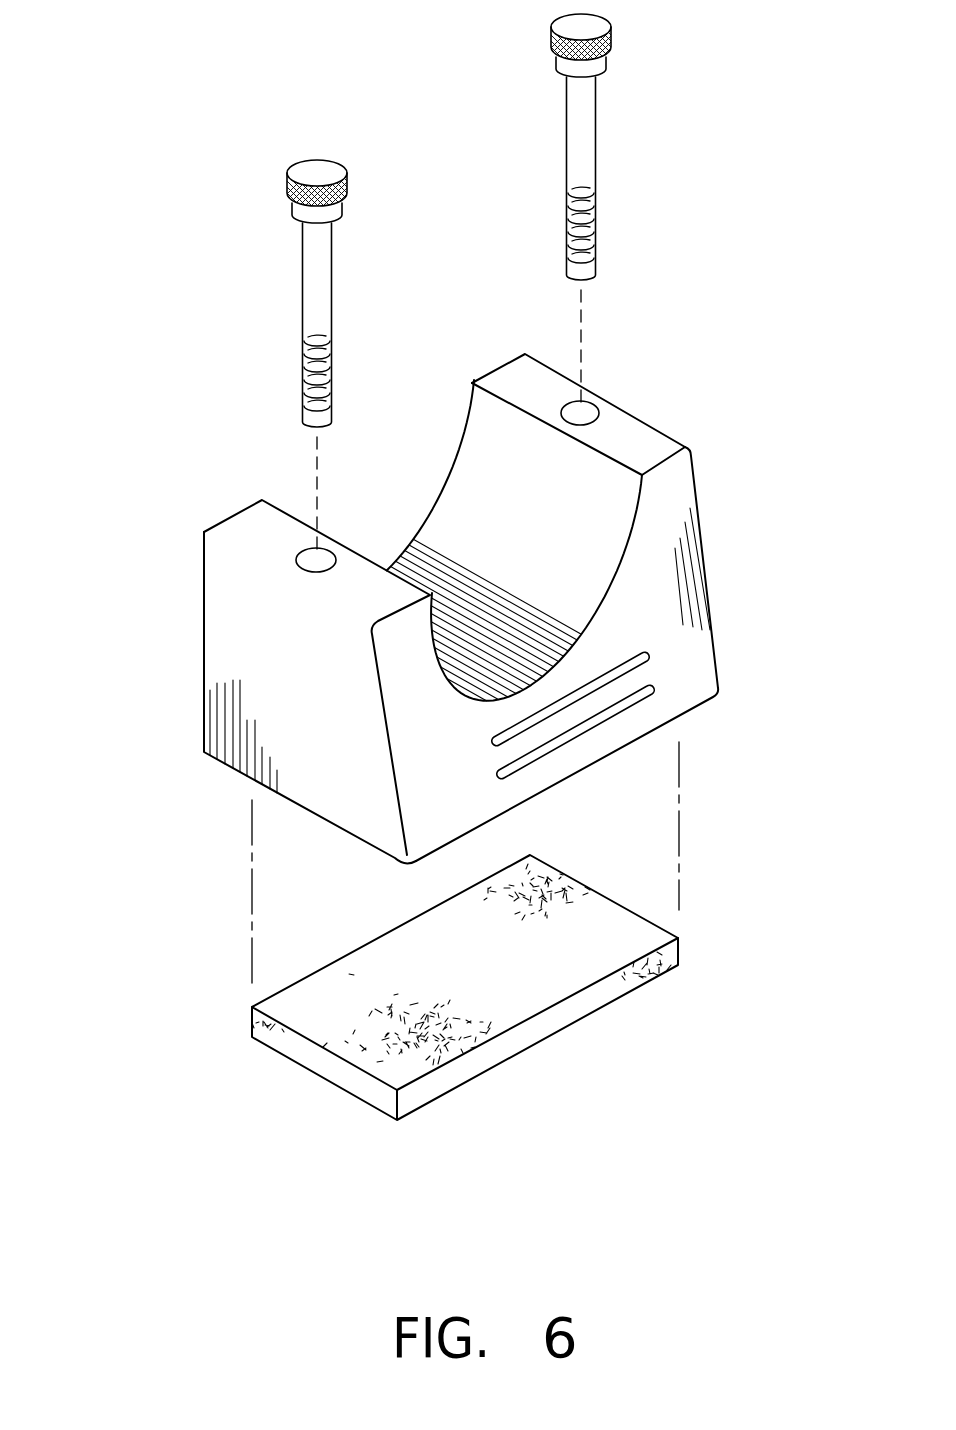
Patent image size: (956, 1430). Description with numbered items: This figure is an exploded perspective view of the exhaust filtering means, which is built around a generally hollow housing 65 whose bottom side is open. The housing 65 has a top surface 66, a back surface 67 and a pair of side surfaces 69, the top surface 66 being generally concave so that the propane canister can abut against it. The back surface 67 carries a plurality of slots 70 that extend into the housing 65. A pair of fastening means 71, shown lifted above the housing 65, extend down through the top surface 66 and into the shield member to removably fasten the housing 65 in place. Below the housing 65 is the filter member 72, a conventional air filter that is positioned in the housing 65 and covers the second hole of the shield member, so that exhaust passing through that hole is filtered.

The housing 65 is at (454, 608).
The top surface 66 is at (253, 522).
The back surface 67 is at (665, 585).
The side surfaces 69 is at (263, 620).
The slots 70 is at (602, 713).
The fastening means 71 is at (587, 160).
The filter member 72 is at (348, 1022).